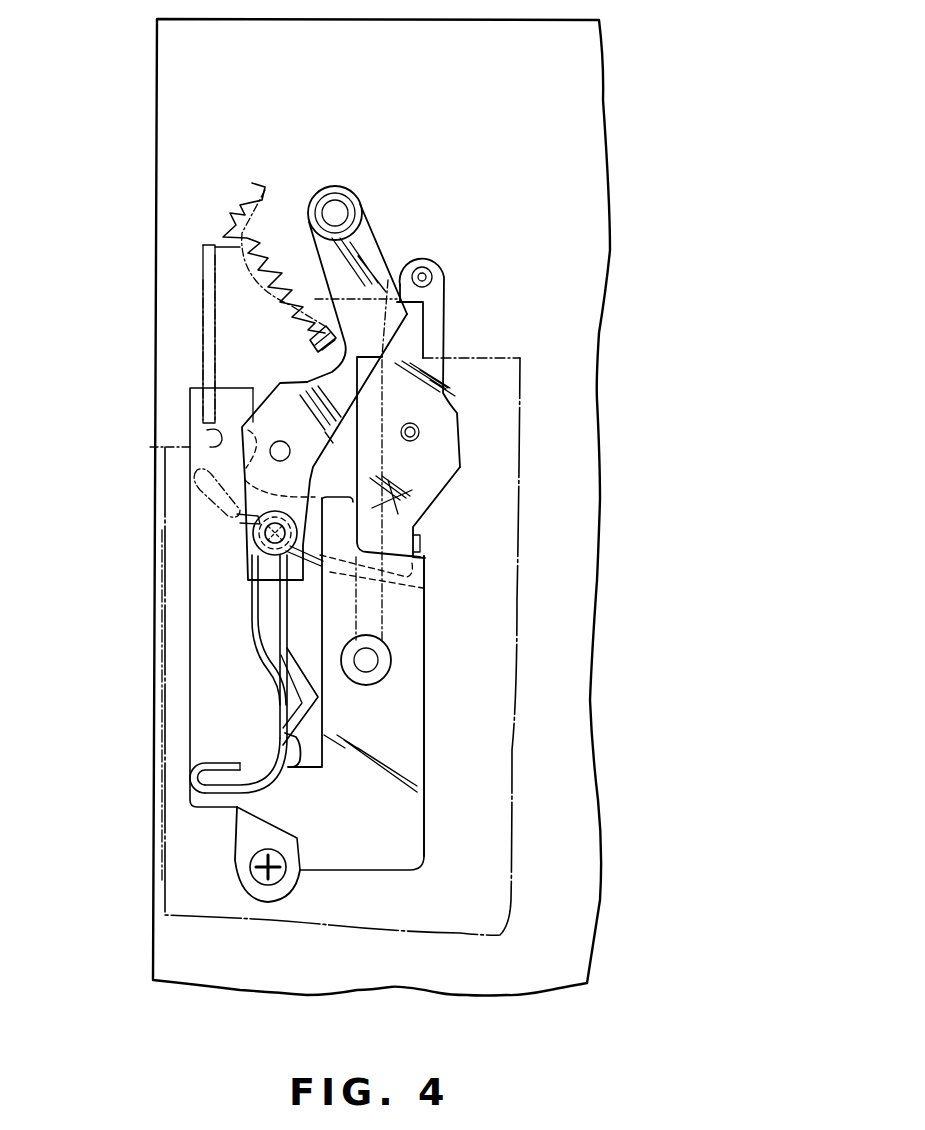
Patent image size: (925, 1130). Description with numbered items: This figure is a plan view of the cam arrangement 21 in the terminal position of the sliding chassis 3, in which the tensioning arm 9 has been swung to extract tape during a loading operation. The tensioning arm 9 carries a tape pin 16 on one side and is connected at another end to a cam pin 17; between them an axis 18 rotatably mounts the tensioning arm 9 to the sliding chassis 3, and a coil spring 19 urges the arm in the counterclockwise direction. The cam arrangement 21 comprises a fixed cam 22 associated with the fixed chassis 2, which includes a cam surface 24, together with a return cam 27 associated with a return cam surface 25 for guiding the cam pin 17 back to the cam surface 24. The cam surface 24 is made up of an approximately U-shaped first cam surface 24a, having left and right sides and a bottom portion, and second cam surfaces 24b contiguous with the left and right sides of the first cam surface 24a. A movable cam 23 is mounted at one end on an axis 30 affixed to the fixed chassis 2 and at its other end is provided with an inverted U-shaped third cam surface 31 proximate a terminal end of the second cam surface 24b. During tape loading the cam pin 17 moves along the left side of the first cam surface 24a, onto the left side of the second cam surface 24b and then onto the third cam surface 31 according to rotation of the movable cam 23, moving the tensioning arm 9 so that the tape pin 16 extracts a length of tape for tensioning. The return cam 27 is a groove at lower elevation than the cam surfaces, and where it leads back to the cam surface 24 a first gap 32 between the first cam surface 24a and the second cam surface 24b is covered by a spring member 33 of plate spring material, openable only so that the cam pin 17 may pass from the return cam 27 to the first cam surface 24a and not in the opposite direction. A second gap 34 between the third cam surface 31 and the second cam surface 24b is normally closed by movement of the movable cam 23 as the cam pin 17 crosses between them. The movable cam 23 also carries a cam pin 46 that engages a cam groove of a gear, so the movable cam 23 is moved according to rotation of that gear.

The fixed chassis 2 is at (156, 53).
The sliding chassis 3 is at (193, 878).
The tensioning arm 9 is at (279, 380).
The tape pin 16 is at (335, 200).
The cam pin 17 is at (240, 522).
The axis 18 is at (270, 448).
The coil spring 19 is at (237, 232).
The cam arrangement 21 is at (686, 685).
The fixed cam 22 is at (198, 767).
The movable cam 23 is at (448, 498).
The cam surface 24 is at (148, 641).
The first cam surface 24a is at (252, 772).
The second cam surfaces 24b is at (262, 665).
The return cam surface 25 is at (290, 612).
The return cam 27 is at (330, 699).
The axis 30 is at (432, 276).
The third cam surface 31 is at (300, 538).
The first gap 32 is at (238, 813).
The spring member 33 is at (280, 745).
The second gap 34 is at (300, 527).
The cam pin 46 is at (419, 430).